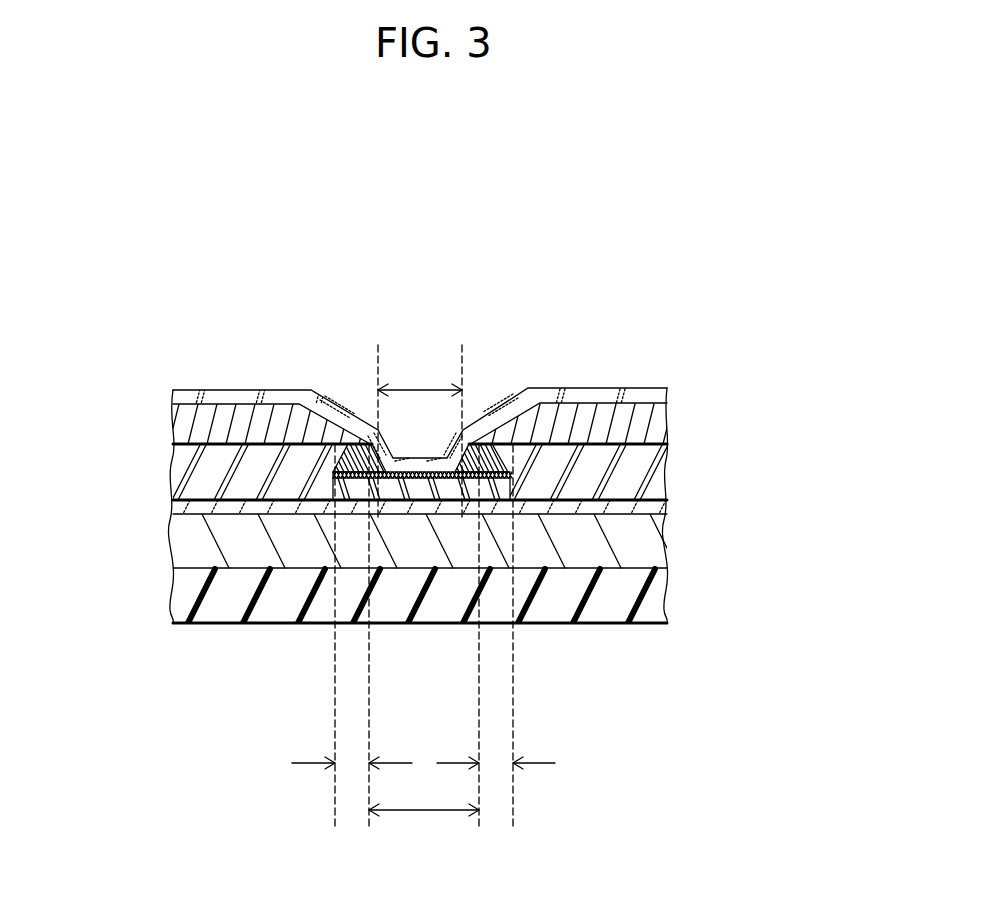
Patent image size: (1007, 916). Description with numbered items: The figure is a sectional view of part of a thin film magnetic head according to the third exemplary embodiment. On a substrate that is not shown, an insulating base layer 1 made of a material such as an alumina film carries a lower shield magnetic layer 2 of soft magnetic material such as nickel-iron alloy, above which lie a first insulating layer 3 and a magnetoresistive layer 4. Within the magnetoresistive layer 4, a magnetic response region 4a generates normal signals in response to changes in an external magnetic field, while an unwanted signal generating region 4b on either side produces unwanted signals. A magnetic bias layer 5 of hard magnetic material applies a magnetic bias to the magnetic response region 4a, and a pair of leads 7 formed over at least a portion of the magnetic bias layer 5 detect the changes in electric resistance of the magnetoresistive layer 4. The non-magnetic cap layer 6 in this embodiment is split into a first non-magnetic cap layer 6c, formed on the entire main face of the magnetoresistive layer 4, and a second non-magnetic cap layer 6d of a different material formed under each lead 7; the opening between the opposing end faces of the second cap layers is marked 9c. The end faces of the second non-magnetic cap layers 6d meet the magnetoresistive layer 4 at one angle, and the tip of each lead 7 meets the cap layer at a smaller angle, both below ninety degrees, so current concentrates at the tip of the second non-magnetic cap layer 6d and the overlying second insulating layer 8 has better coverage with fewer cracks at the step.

The insulating base layer 1 is at (180, 622).
The lower shield magnetic layer 2 is at (203, 540).
The first insulating layer 3 is at (652, 507).
The magnetoresistive layer 4 is at (450, 487).
The magnetic response region 4a is at (424, 654).
The unwanted signal generating region 4b is at (433, 637).
The magnetic bias layer 5 is at (200, 466).
The non-magnetic cap layer 6 is at (314, 634).
The first non-magnetic cap layer 6c is at (412, 466).
The second non-magnetic cap layer 6d is at (372, 474).
The lead 7 is at (638, 417).
The second insulating layer 8 is at (642, 387).
The opening width 9c is at (420, 432).